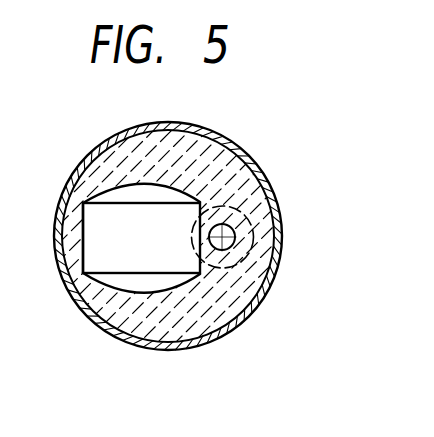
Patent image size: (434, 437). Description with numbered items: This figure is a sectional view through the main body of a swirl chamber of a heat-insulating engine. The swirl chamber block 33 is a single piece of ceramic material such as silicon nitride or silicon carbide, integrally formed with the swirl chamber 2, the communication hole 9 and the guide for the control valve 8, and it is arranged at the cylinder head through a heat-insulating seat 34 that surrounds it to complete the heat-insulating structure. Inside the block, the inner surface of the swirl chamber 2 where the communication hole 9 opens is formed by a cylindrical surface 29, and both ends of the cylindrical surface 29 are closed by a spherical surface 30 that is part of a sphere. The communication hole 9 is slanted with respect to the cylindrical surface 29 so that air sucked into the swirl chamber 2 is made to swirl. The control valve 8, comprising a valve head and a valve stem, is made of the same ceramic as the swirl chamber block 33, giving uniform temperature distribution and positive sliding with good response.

The swirl chamber 2 is at (104, 257).
The control valve 8 is at (229, 243).
The communication hole 9 is at (226, 270).
The cylindrical surface 29 is at (89, 227).
The spherical surface 30 is at (122, 181).
The swirl chamber block 33 is at (227, 162).
The heat-insulating seat 34 is at (272, 208).